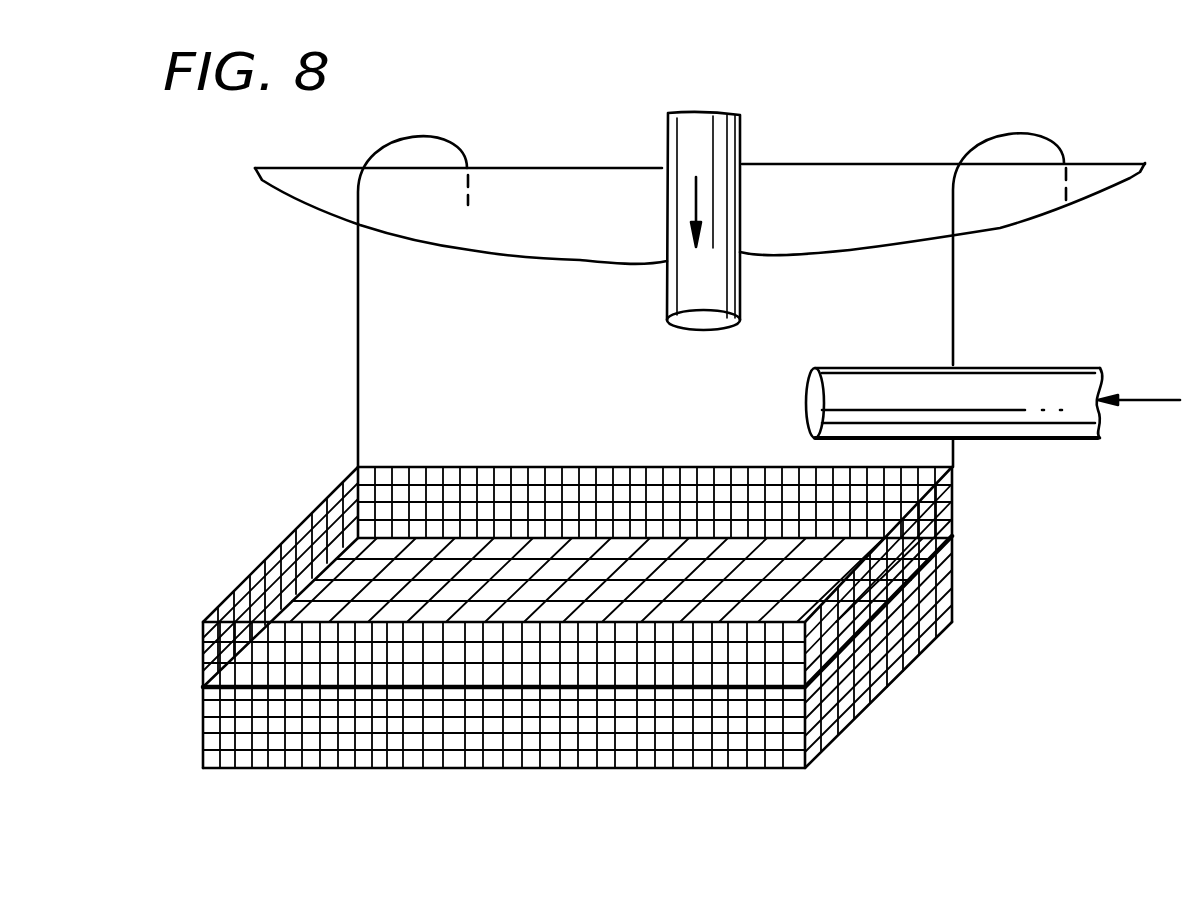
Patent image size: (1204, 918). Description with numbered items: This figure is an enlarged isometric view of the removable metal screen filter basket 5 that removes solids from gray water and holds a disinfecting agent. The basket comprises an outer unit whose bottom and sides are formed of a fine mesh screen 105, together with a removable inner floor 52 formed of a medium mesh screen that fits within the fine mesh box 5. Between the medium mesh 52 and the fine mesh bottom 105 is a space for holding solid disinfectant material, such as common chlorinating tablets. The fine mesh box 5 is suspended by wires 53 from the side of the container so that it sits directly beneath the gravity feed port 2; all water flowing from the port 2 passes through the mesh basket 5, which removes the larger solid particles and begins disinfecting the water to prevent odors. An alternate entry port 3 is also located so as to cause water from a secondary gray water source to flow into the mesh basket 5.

The inlet tube 2 is at (712, 271).
The outlet tube 3 is at (993, 403).
The mesh basket 5 is at (882, 685).
The perforated floor 52 is at (519, 557).
The support rods 53 is at (360, 299).
The lower mesh base 105 is at (650, 768).